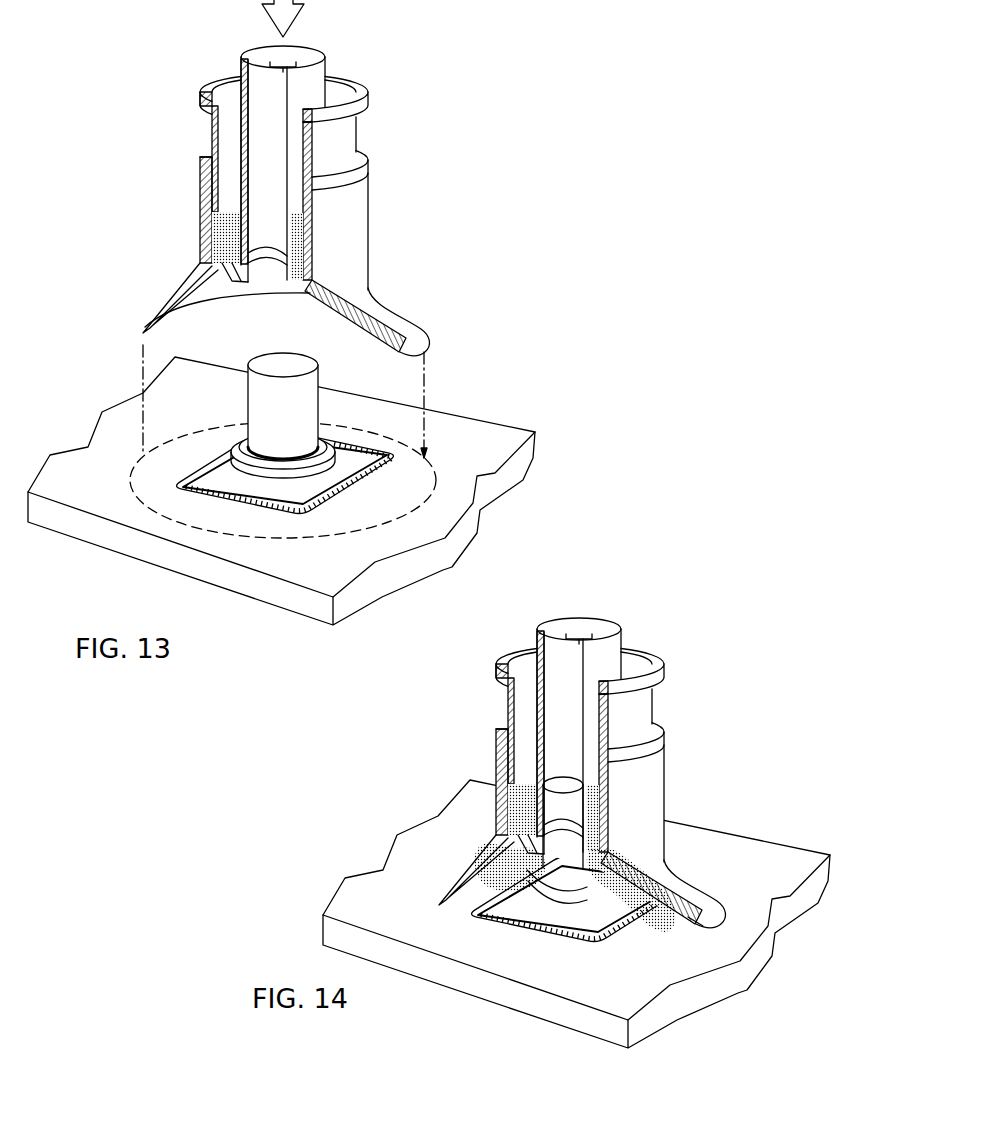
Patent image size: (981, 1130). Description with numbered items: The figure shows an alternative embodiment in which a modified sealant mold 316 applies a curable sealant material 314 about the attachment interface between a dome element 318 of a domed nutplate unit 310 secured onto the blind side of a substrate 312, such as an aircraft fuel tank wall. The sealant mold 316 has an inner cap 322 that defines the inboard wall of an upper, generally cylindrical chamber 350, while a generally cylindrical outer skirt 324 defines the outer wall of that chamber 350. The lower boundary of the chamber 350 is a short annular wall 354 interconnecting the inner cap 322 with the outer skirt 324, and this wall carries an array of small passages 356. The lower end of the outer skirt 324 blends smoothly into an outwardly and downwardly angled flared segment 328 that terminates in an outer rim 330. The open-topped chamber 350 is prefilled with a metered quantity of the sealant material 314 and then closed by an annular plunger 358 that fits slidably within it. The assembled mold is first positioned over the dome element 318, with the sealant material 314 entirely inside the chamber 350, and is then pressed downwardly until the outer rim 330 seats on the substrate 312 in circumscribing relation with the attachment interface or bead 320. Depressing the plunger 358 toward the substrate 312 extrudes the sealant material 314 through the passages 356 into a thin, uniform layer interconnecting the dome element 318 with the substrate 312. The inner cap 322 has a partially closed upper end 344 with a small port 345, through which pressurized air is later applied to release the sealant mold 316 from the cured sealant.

In FIG. 13, the domed nutplate unit 310 is at (233, 407).
In FIG. 13, the substrate 312 is at (498, 491).
In FIG. 14, the substrate 312 is at (793, 913).
In FIG. 13, the curable sealant material 314 is at (224, 228).
In FIG. 14, the curable sealant material 314 is at (535, 870).
In FIG. 13, the sealant mold 316 is at (375, 277).
In FIG. 14, the sealant mold 316 is at (670, 852).
In FIG. 13, the dome element 318 is at (318, 378).
In FIG. 14, the dome element 318 is at (573, 779).
In FIG. 13, the attachment interface or bead 320 is at (362, 491).
In FIG. 14, the attachment interface or bead 320 is at (592, 937).
In FIG. 13, the inner cap 322 is at (244, 155).
In FIG. 14, the inner cap 322 is at (581, 692).
In FIG. 13, the outer skirt 324 is at (369, 213).
In FIG. 14, the outer skirt 324 is at (663, 790).
In FIG. 13, the flared segment 328 is at (180, 290).
In FIG. 14, the flared segment 328 is at (700, 882).
In FIG. 13, the outer rim 330 is at (170, 317).
In FIG. 14, the outer rim 330 is at (703, 925).
In FIG. 13, the upper end 344 is at (262, 52).
In FIG. 14, the upper end 344 is at (602, 625).
In FIG. 13, the port 345 is at (296, 62).
In FIG. 14, the port 345 is at (573, 630).
In FIG. 13, the chamber 350 is at (297, 243).
In FIG. 14, the chamber 350 is at (631, 858).
In FIG. 13, the annular wall 354 is at (231, 268).
In FIG. 14, the annular wall 354 is at (527, 843).
In FIG. 13, the passages 356 is at (223, 272).
In FIG. 14, the passages 356 is at (588, 868).
In FIG. 13, the plunger 358 is at (357, 138).
In FIG. 14, the plunger 358 is at (652, 710).